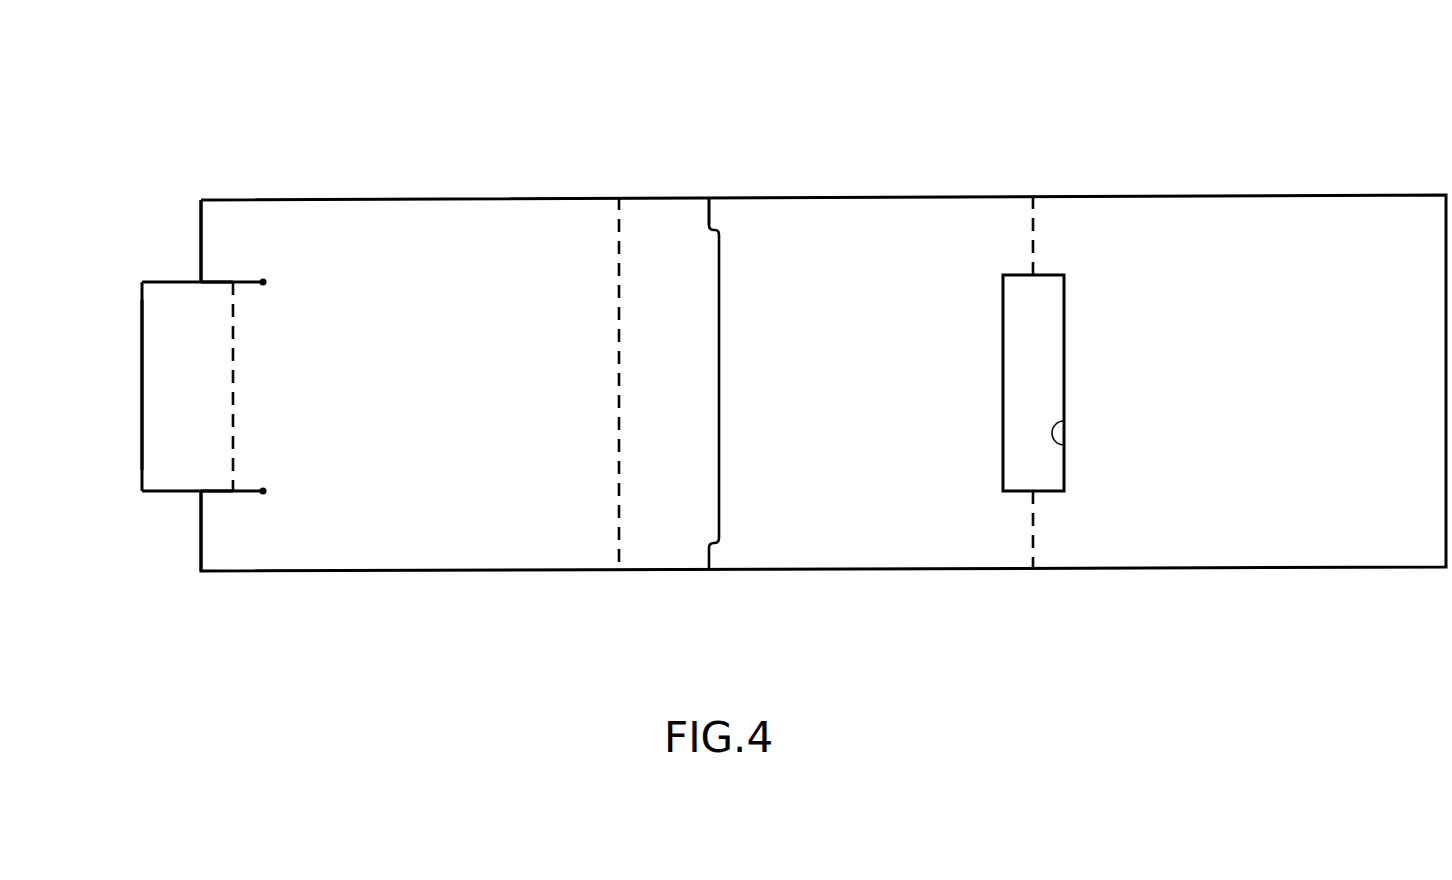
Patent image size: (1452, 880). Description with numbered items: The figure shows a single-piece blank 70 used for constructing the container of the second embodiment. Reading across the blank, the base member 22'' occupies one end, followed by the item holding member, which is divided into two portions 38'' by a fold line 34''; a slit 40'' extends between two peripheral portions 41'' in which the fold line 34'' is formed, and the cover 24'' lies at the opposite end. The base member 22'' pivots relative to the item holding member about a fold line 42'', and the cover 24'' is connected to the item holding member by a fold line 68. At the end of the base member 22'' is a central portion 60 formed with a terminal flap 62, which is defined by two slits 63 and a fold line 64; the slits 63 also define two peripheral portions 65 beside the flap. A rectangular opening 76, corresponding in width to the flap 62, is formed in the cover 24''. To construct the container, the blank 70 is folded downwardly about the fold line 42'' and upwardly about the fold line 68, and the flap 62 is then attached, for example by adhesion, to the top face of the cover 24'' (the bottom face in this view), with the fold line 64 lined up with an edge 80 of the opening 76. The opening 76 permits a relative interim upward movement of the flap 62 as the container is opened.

The blank 70 is at (937, 173).
The base member 22'' is at (336, 342).
The portion of item holding member 38'' is at (765, 382).
The cover 24'' is at (1275, 382).
The fold line 42'' is at (572, 410).
The slit 40'' is at (766, 350).
The fold line 34'' is at (677, 164).
The peripheral portions 41'' is at (734, 160).
The fold line 68 is at (1035, 228).
The rectangular opening 76 is at (1042, 317).
The edge 80 is at (1063, 450).
The central portion 60 is at (247, 425).
The terminal flap 62 is at (168, 402).
The fold line 64 is at (237, 327).
The peripheral portions 65 is at (218, 230).
The slits 63 is at (217, 278).